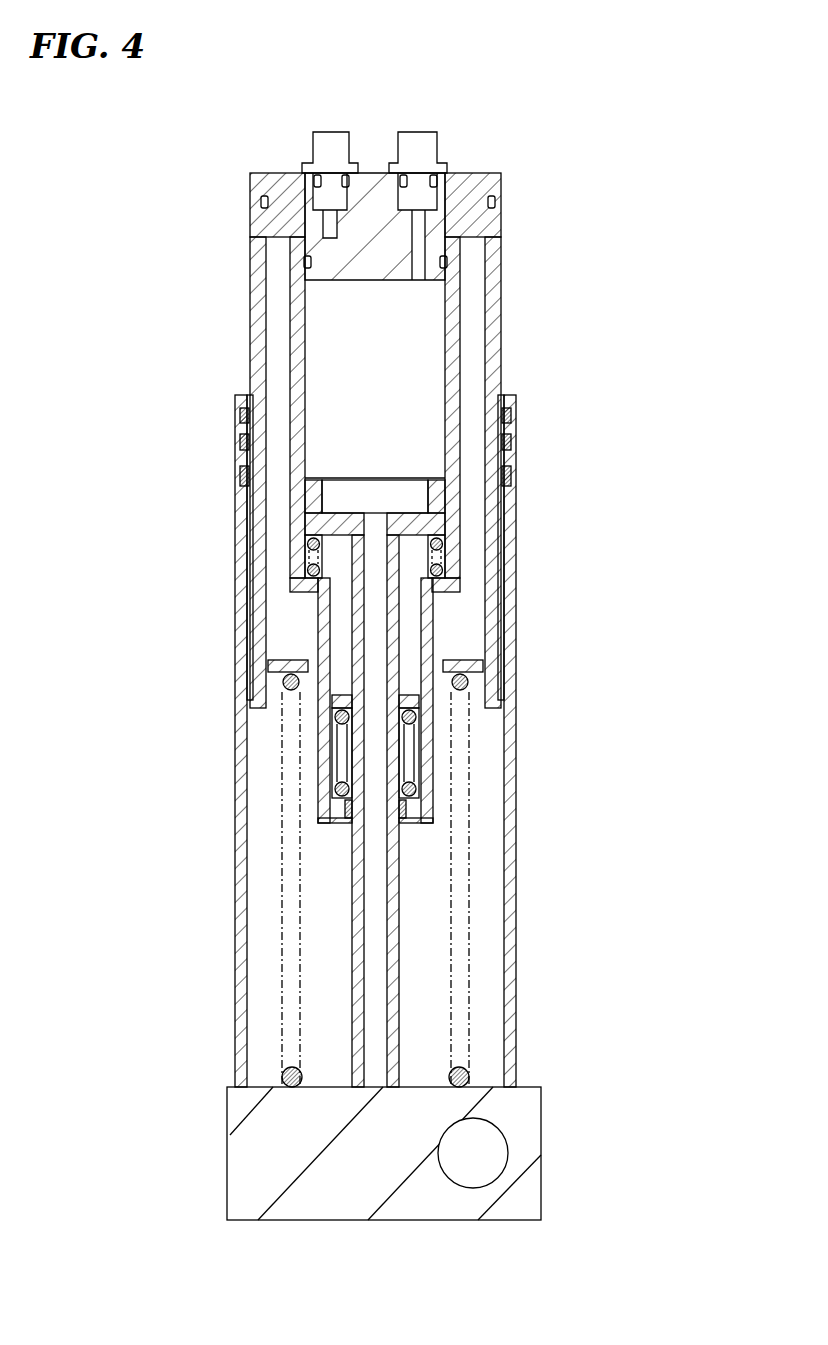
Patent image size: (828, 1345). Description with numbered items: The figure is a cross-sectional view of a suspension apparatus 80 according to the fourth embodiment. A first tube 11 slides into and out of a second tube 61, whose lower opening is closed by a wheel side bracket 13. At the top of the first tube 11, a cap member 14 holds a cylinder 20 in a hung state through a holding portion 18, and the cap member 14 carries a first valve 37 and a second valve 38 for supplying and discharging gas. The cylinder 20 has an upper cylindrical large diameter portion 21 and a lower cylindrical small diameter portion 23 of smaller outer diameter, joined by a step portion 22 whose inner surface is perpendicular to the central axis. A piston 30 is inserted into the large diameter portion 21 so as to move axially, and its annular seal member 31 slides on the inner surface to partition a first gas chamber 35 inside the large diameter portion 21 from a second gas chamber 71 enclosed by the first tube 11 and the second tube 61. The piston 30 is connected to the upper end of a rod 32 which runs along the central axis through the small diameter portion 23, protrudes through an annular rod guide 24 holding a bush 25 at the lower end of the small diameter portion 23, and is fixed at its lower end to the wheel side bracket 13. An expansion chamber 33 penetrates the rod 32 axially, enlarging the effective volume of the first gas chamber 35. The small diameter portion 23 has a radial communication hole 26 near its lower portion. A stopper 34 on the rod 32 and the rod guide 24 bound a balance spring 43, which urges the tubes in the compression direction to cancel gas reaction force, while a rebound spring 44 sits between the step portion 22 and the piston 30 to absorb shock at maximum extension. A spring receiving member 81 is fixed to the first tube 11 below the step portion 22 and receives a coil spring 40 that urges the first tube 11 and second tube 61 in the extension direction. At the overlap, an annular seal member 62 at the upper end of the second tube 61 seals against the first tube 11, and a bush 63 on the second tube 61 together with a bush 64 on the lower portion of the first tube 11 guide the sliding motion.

The first tube 11 is at (493, 341).
The wheel side bracket 13 is at (530, 1195).
The cap member 14 is at (371, 263).
The holding portion 18 is at (480, 213).
The cylinder 20 is at (283, 297).
The large diameter portion 21 is at (297, 320).
The step portion 22 is at (295, 577).
The small diameter portion 23 is at (318, 790).
The rod guide 24 is at (333, 822).
The bush 25 is at (405, 818).
The communication hole 26 is at (425, 745).
The piston 30 is at (430, 478).
The seal member 31 is at (446, 505).
The rod 32 is at (395, 890).
The expansion chamber 33 is at (370, 950).
The stopper 34 is at (335, 703).
The first gas chamber 35 is at (332, 390).
The first valve 37 is at (425, 148).
The second valve 38 is at (325, 148).
The coil spring 40 is at (466, 1081).
The balance spring 43 is at (334, 745).
The rebound spring 44 is at (305, 545).
The second tube 61 is at (513, 848).
The seal member 62 is at (240, 423).
The bush 63 is at (242, 480).
The bush 64 is at (505, 675).
The second gas chamber 71 is at (328, 925).
The suspension apparatus 80 is at (624, 180).
The spring receiving member 81 is at (465, 662).